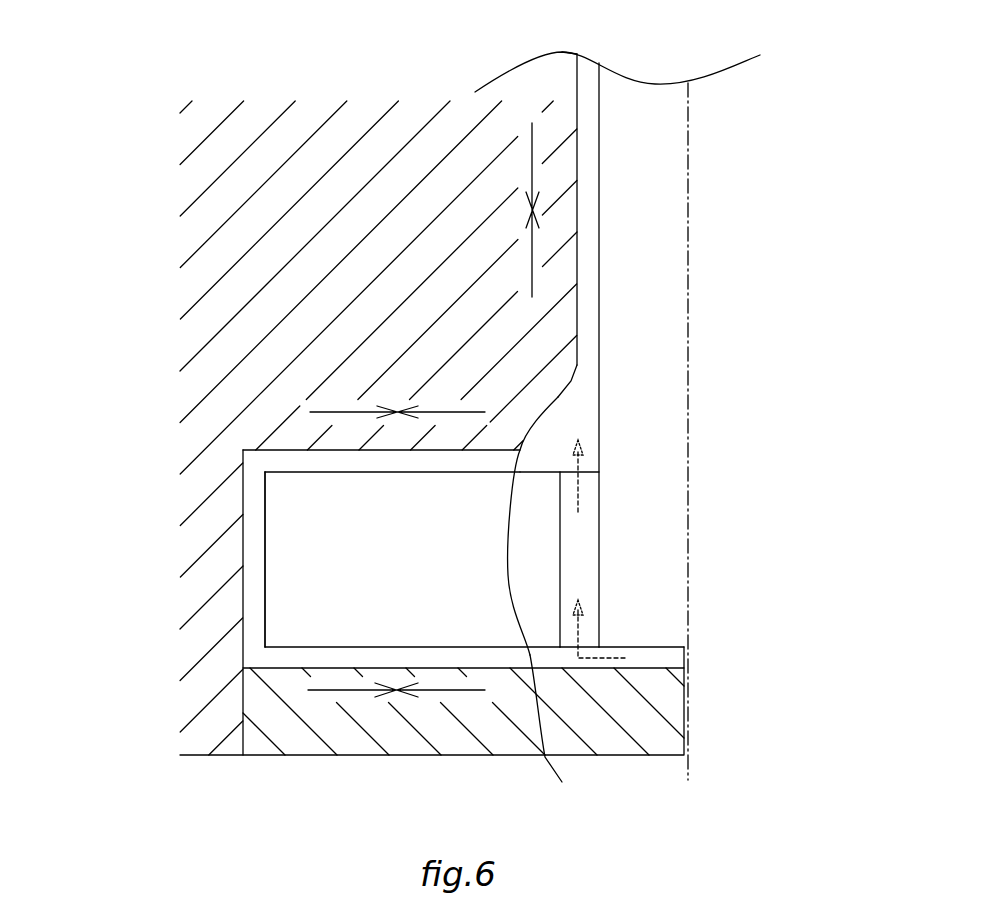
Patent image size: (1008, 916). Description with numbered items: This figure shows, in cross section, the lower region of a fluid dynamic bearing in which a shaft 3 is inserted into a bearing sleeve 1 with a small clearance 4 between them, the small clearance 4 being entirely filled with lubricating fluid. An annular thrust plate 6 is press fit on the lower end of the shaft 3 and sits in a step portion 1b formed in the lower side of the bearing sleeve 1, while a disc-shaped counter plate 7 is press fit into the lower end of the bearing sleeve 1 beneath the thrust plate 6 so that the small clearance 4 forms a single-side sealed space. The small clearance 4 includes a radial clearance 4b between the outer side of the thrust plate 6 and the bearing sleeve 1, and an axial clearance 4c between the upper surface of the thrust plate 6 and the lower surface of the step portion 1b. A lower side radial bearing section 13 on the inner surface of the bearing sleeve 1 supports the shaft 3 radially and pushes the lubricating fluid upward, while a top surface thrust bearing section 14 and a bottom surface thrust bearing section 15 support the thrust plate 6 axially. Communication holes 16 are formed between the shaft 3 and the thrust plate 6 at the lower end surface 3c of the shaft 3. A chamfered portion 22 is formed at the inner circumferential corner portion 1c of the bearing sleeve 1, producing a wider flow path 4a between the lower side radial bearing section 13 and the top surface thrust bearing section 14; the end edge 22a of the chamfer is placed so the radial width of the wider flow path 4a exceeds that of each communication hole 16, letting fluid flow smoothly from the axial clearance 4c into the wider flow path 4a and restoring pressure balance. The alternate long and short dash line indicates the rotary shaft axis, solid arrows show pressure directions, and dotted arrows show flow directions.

The bearing sleeve 1 is at (348, 282).
The step portion 1b is at (243, 448).
The inner circumferential corner portion 1c is at (557, 398).
The shaft 3 is at (668, 200).
The lower end surface of the shaft 3c is at (635, 647).
The small clearance 4 is at (253, 562).
The wider flow path 4a is at (577, 432).
The radial clearance 4b is at (260, 533).
The axial clearance 4c is at (652, 658).
The thrust plate 6 is at (345, 538).
The counter plate 7 is at (423, 722).
The lower side radial bearing section 13 is at (577, 280).
The top surface thrust bearing section 14 is at (387, 475).
The bottom surface thrust bearing section 15 is at (378, 647).
The communication hole 16 is at (582, 577).
The chamfered portion 22 is at (560, 397).
The end edge of the chamfer 22a is at (572, 739).